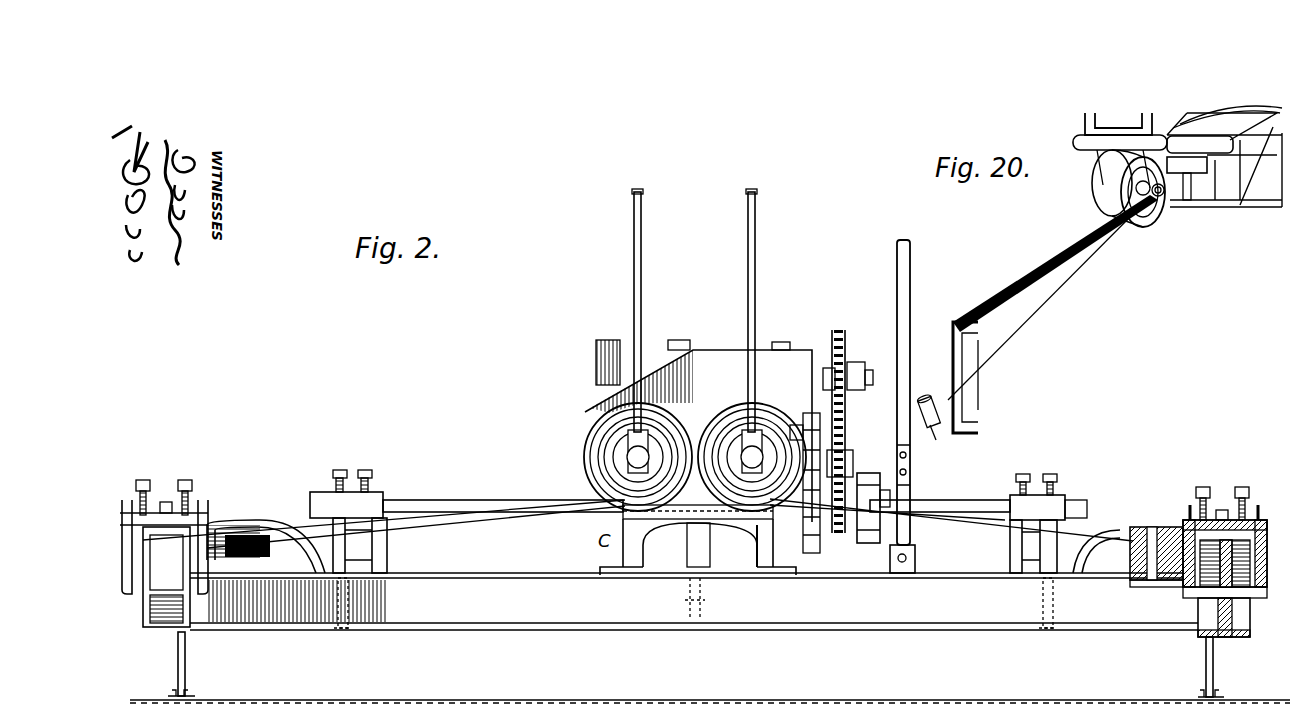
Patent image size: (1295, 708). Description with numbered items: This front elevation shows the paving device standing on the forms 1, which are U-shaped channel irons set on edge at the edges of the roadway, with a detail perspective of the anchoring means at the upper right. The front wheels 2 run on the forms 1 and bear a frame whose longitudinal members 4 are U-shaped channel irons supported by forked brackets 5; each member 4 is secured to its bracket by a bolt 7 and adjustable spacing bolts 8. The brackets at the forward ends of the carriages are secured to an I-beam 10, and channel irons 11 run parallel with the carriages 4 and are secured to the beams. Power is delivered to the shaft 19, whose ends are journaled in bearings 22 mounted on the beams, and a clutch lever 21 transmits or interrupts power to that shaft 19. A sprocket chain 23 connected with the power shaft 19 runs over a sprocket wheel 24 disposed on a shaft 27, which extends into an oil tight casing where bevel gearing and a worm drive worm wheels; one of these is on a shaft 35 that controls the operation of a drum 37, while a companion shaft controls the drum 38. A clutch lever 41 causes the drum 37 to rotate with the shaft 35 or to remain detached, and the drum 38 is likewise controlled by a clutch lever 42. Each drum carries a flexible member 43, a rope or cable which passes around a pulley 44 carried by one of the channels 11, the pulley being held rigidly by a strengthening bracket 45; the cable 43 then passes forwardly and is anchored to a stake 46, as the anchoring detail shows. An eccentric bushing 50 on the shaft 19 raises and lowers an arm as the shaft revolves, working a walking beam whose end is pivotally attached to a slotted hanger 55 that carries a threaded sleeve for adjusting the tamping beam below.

In FIG. 2, the forms 1 is at (178, 661).
In FIG. 20, the forms 1 is at (1088, 170).
In FIG. 2, the front wheels 2 is at (148, 618).
In FIG. 20, the front wheels 2 is at (1128, 233).
In FIG. 2, the longitudinal members 4 is at (197, 506).
In FIG. 2, the forked brackets 5 is at (122, 523).
In FIG. 20, the forked brackets 5 is at (1083, 126).
In FIG. 2, the bolt 7 is at (168, 497).
In FIG. 2, the adjustable spacing bolts 8 is at (688, 488).
In FIG. 20, the I-beam 10 is at (1270, 207).
In FIG. 2, the channel irons 11 is at (1161, 582).
In FIG. 20, the channel irons 11 is at (1195, 186).
In FIG. 2, the shaft 19 is at (418, 503).
In FIG. 2, the clutch lever 21 is at (914, 332).
In FIG. 2, the bearings 22 is at (382, 546).
In FIG. 2, the sprocket chain 23 is at (843, 331).
In FIG. 2, the sprocket wheel 24 is at (846, 352).
In FIG. 2, the shaft 27 is at (866, 379).
In FIG. 2, the shaft 35 is at (748, 535).
In FIG. 2, the drum 37 is at (790, 418).
In FIG. 2, the drum 38 is at (643, 448).
In FIG. 2, the clutch lever 41 is at (753, 293).
In FIG. 2, the clutch lever 42 is at (641, 300).
In FIG. 2, the flexible member 43 is at (477, 513).
In FIG. 20, the flexible member 43 is at (1097, 210).
In FIG. 2, the pulley 44 is at (265, 530).
In FIG. 20, the pulley 44 is at (1210, 180).
In FIG. 2, the strengthening bracket 45 is at (258, 527).
In FIG. 20, the stake 46 is at (932, 405).
In FIG. 2, the eccentric bushing 50 is at (345, 487).
In FIG. 2, the slotted hanger 55 is at (357, 573).